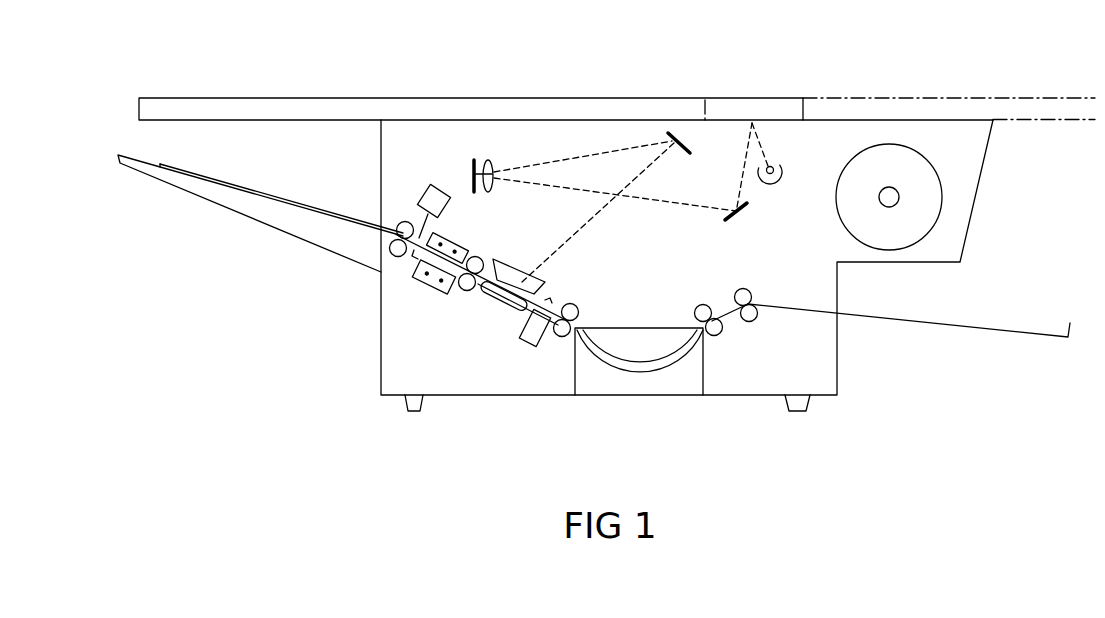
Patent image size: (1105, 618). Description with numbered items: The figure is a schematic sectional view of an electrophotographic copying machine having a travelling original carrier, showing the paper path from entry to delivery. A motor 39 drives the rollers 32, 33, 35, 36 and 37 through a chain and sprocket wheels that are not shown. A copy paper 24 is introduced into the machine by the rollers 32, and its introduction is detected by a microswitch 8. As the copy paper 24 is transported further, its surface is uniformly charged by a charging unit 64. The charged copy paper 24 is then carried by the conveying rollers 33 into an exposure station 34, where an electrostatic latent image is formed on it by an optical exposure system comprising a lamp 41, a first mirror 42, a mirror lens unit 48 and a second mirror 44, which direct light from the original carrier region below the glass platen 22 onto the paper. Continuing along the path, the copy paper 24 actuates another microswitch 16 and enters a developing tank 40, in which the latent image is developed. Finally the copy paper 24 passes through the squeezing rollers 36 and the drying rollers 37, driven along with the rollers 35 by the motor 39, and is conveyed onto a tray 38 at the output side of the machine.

The platen glass 22 is at (555, 98).
The mirror lens unit 48 is at (490, 160).
The second mirror 44 is at (680, 138).
The first mirror 42 is at (745, 214).
The lamp 41 is at (783, 166).
The motor 39 is at (940, 185).
The tray 38 is at (1005, 333).
The copy paper 24 is at (291, 203).
The microswitch 8 is at (428, 188).
The rollers 32 is at (402, 257).
The charging unit 64 is at (425, 279).
The conveying rollers 33 is at (462, 289).
The exposure station 34 is at (507, 300).
The microswitch 16 is at (532, 327).
The rollers 35 is at (556, 334).
The developing tank 40 is at (573, 384).
The squeezing rollers 36 is at (712, 335).
The drying rollers 37 is at (752, 322).